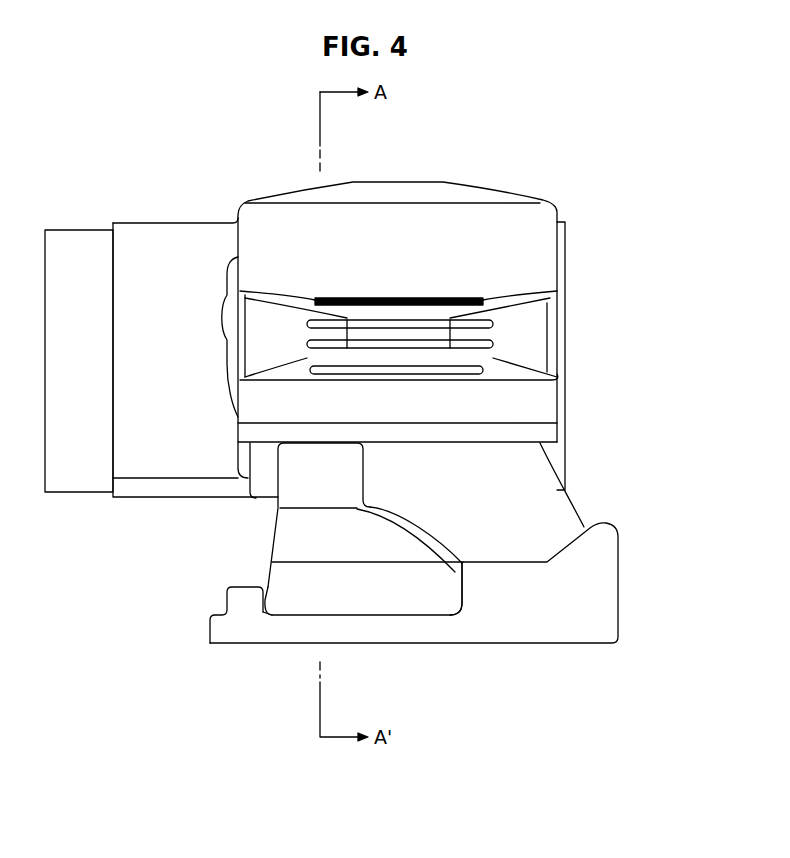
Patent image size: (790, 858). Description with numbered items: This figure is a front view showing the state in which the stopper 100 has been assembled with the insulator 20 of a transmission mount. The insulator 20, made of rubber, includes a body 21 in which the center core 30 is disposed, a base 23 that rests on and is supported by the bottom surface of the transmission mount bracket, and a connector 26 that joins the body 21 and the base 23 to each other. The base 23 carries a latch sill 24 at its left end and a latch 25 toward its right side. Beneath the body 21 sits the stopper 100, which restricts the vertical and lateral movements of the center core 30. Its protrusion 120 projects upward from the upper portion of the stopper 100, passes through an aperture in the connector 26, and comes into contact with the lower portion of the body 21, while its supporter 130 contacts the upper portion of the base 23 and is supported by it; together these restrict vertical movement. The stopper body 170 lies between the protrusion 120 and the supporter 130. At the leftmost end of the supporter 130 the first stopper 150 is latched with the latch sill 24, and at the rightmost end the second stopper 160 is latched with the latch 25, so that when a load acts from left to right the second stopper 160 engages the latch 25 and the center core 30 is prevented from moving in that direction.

The insulator 20 is at (428, 302).
The body 21 is at (525, 240).
The base 23 is at (607, 595).
The latch sill 24 is at (224, 598).
The latch 25 is at (455, 570).
The connector 26 is at (530, 484).
The center core 30 is at (80, 216).
The stopper 100 is at (399, 571).
The protrusion 120 is at (292, 466).
The supporter 130 is at (387, 600).
The first stopper 150 is at (250, 596).
The second stopper 160 is at (464, 596).
The body 170 is at (283, 548).